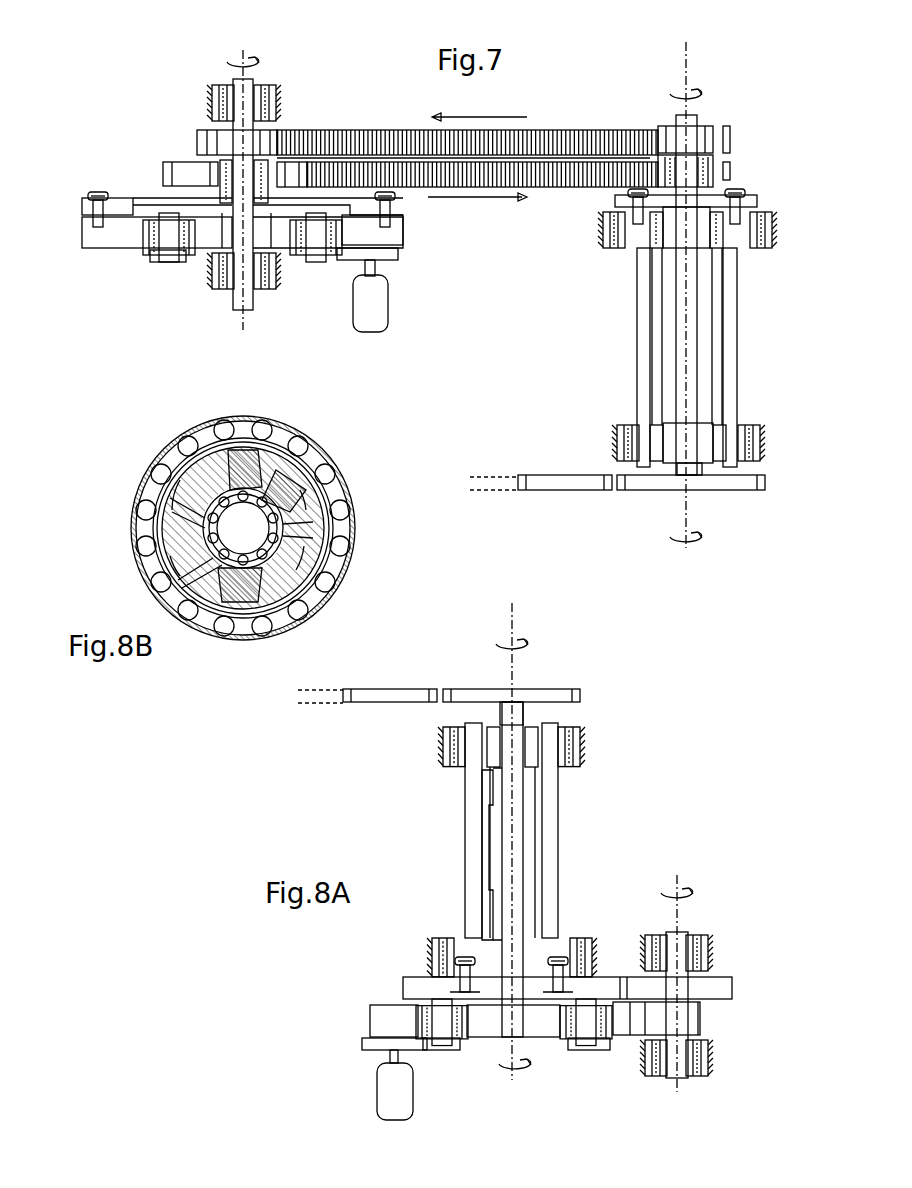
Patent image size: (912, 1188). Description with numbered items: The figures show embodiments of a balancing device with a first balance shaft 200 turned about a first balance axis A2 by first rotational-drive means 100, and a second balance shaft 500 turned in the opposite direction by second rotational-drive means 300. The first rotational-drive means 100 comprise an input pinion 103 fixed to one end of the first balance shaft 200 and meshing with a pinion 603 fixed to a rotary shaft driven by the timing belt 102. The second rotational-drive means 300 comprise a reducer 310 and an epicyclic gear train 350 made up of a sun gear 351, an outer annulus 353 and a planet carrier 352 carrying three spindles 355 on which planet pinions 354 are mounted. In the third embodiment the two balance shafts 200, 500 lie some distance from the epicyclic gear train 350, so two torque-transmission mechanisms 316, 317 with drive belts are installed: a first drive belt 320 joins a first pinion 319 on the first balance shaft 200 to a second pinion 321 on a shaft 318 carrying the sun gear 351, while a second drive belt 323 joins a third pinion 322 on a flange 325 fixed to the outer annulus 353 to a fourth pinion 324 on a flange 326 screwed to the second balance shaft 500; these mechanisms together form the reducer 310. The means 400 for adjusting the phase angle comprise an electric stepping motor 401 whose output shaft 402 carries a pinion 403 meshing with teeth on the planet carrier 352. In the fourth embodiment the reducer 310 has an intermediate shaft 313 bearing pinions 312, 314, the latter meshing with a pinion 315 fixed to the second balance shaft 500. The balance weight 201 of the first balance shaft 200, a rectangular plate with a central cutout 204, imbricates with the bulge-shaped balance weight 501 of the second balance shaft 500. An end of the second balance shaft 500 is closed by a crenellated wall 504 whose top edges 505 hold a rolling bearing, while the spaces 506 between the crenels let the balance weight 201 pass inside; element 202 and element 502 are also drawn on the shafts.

In FIG. 7, the first rotational-drive means 100 is at (516, 466).
In FIG. 8A, the first rotational-drive means 100 is at (400, 666).
In FIG. 7, the timing belt 102 is at (486, 492).
In FIG. 8A, the timing belt 102 is at (313, 704).
In FIG. 7, the input pinion 103 is at (738, 492).
In FIG. 8A, the input pinion 103 is at (556, 690).
In FIG. 7, the first balance shaft 200 is at (676, 300).
In FIG. 8B, the first balance shaft 200 is at (243, 528).
In FIG. 8A, the first balance shaft 200 is at (523, 797).
In FIG. 7, the balance weight 201 is at (705, 270).
In FIG. 8B, the balance weight 201 is at (226, 606).
In FIG. 8A, the balance weight 201 is at (498, 783).
In FIG. 7, the inner tube 202 is at (676, 330).
In FIG. 8A, the inner tube 202 is at (524, 856).
In FIG. 8A, the central cutout 204 is at (490, 875).
In FIG. 7, the second rotational-drive means 300 is at (170, 62).
In FIG. 8A, the second rotational-drive means 300 is at (740, 1077).
In FIG. 7, the reducer 310 is at (148, 68).
In FIG. 8A, the reducer 310 is at (652, 1094).
In FIG. 8A, the pinion 312 is at (696, 1012).
In FIG. 8A, the intermediate shaft 313 is at (683, 937).
In FIG. 8A, the pinion 314 is at (715, 985).
In FIG. 8A, the pinion 315 is at (423, 982).
In FIG. 7, the torque-transmission mechanism 316 is at (202, 118).
In FIG. 7, the torque-transmission mechanism 317 is at (192, 155).
In FIG. 7, the shaft 318 is at (243, 312).
In FIG. 7, the first pinion 319 is at (711, 128).
In FIG. 7, the first drive belt 320 is at (550, 128).
In FIG. 7, the second pinion 321 is at (300, 155).
In FIG. 7, the third pinion 322 is at (305, 161).
In FIG. 7, the second drive belt 323 is at (554, 188).
In FIG. 7, the fourth pinion 324 is at (732, 170).
In FIG. 7, the flange 325 is at (116, 200).
In FIG. 7, the flange 326 is at (748, 197).
In FIG. 7, the epicyclic gear train 350 is at (107, 160).
In FIG. 8A, the epicyclic gear train 350 is at (610, 1110).
In FIG. 7, the sun gear 351 is at (286, 260).
In FIG. 8A, the sun gear 351 is at (549, 1040).
In FIG. 7, the planet carrier 352 is at (184, 262).
In FIG. 8A, the planet carrier 352 is at (457, 1048).
In FIG. 7, the outer annulus 353 is at (94, 252).
In FIG. 8A, the outer annulus 353 is at (640, 1008).
In FIG. 7, the planet pinion 354 is at (210, 254).
In FIG. 8A, the planet pinion 354 is at (484, 1030).
In FIG. 7, the spindle 355 is at (158, 233).
In FIG. 8A, the spindle 355 is at (401, 1014).
In FIG. 7, the means for adjusting the phase angle 400 is at (373, 333).
In FIG. 8A, the means for adjusting the phase angle 400 is at (376, 1085).
In FIG. 7, the electric stepping motor 401 is at (375, 306).
In FIG. 8A, the electric stepping motor 401 is at (398, 1109).
In FIG. 7, the output shaft 402 is at (378, 272).
In FIG. 8A, the output shaft 402 is at (392, 1059).
In FIG. 7, the pinion 403 is at (402, 253).
In FIG. 8A, the pinion 403 is at (366, 1042).
In FIG. 7, the second balance shaft 500 is at (634, 362).
In FIG. 8B, the second balance shaft 500 is at (347, 483).
In FIG. 8A, the second balance shaft 500 is at (464, 780).
In FIG. 7, the balance weight 501 is at (718, 302).
In FIG. 8A, the balance weight 501 is at (487, 847).
In FIG. 7, the outer tube wall 502 is at (637, 390).
In FIG. 8A, the outer tube wall 502 is at (470, 816).
In FIG. 8B, the crenellated wall 504 is at (280, 582).
In FIG. 8B, the top edges of the crenels 505 is at (262, 468).
In FIG. 8B, the spaces 506 is at (208, 466).
In FIG. 7, the pinion 603 is at (564, 492).
In FIG. 8A, the pinion 603 is at (389, 702).
In FIG. 7, the first balance axis A2 is at (684, 64).
In FIG. 8A, the first balance axis A2 is at (514, 616).